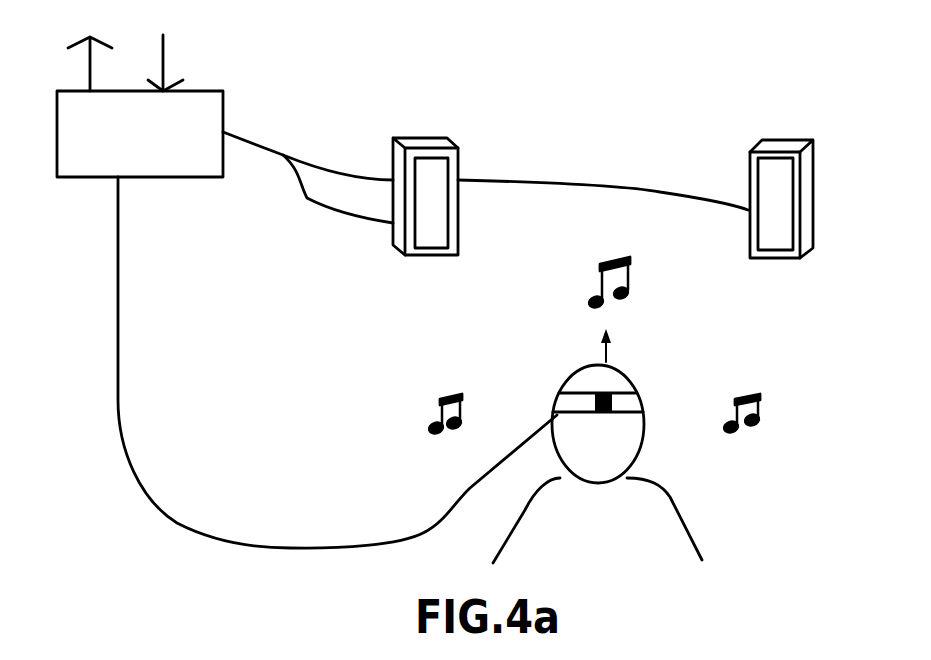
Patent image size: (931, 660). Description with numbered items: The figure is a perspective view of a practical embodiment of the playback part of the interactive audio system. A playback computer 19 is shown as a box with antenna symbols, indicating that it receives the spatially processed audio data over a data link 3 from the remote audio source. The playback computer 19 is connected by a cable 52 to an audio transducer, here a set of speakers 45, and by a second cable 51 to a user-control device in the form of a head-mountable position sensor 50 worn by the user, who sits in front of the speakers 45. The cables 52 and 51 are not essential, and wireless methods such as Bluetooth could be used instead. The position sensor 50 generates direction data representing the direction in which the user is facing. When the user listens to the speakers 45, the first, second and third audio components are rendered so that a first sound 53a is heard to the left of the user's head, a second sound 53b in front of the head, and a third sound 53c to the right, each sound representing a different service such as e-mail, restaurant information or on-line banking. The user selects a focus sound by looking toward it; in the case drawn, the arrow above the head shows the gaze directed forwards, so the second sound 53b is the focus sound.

The data link 3 is at (83, 68).
The playback computer 19 is at (89, 177).
The speakers 45 is at (643, 104).
The head-mountable position sensor 50 is at (647, 393).
The cable 51 is at (283, 548).
The cable 52 is at (285, 155).
The first sound 53a is at (442, 398).
The second sound 53b is at (624, 260).
The third sound 53c is at (762, 402).